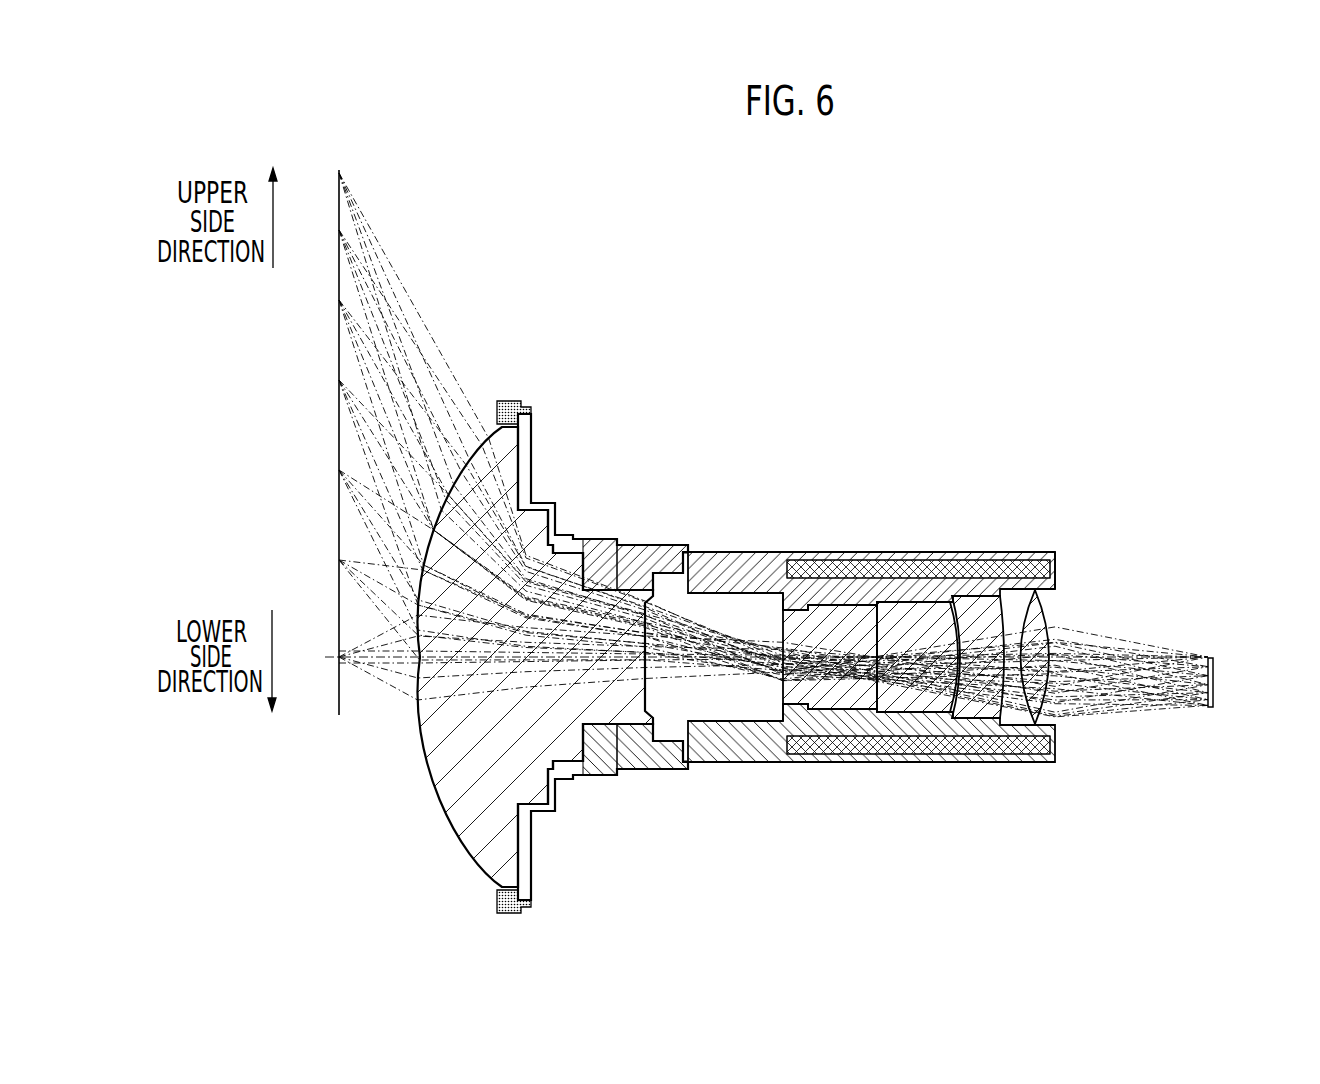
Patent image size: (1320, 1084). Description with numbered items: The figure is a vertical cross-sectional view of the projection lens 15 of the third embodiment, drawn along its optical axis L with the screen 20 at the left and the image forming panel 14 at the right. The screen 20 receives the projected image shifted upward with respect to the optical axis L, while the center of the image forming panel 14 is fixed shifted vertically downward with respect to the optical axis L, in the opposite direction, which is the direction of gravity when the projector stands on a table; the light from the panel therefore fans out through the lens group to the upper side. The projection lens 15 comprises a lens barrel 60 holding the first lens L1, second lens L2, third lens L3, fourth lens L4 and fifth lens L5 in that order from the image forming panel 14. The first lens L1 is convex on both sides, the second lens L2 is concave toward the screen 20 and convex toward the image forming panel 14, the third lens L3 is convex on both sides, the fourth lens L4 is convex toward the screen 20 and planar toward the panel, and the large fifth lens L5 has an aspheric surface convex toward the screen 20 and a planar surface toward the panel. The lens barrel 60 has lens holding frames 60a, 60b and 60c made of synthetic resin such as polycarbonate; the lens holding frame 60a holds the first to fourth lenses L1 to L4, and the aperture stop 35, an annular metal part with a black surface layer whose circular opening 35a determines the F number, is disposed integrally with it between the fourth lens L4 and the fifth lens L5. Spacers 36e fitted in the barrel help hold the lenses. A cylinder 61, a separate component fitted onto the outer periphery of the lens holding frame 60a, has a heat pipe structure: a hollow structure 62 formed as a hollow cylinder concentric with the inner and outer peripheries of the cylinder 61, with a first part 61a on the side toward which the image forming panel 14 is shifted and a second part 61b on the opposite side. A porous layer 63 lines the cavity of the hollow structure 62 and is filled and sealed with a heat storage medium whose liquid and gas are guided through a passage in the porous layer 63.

The image forming panel 14 is at (1213, 655).
The projection lens 15 is at (773, 621).
The screen 20 is at (338, 258).
The aperture stop 35 is at (785, 605).
The circular opening 35a is at (780, 704).
The spacer 36e is at (1012, 549).
The lens barrel 60 is at (741, 615).
The lens holding frame 60a is at (705, 578).
The lens holding frame 60b is at (597, 560).
The lens holding frame 60c is at (512, 400).
The cylinder 61 is at (871, 514).
The first part 61a is at (890, 767).
The second part 61b is at (877, 548).
The hollow structure 62 is at (871, 807).
The porous layer 63 is at (790, 750).
The optical axis L is at (357, 668).
The first lens L1 is at (1066, 722).
The second lens L2 is at (985, 705).
The third lens L3 is at (945, 700).
The fourth lens L4 is at (825, 705).
The fifth lens L5 is at (622, 700).